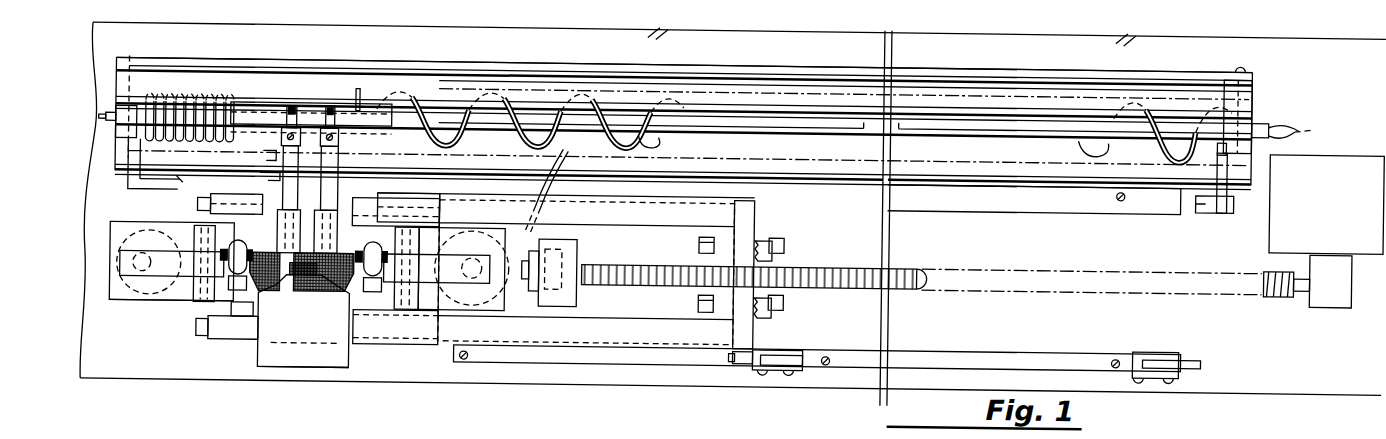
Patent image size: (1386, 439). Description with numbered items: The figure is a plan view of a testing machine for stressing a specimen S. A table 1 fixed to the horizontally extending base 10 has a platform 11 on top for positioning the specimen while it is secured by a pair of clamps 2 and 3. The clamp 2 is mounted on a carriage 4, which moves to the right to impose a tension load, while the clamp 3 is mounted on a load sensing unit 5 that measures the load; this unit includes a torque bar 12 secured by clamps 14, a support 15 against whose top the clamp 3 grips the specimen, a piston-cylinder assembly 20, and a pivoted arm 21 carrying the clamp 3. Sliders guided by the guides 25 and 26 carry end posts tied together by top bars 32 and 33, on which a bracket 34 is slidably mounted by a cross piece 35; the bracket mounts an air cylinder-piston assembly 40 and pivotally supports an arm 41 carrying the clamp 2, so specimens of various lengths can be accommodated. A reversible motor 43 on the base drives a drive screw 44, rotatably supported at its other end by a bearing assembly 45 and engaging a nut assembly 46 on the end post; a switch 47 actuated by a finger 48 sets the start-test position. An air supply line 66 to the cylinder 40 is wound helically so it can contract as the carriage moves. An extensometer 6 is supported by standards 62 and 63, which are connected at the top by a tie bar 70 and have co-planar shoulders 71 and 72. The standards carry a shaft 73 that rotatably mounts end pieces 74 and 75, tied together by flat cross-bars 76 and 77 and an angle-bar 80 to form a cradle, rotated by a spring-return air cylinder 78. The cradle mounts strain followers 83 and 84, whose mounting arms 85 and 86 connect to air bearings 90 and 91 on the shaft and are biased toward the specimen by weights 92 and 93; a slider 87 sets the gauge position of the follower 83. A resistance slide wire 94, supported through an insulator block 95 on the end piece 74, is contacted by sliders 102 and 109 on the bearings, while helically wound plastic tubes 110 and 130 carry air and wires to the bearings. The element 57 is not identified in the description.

The table 1 is at (292, 372).
The clamp 2 is at (388, 228).
The clamp 3 is at (220, 234).
The carriage 4 is at (768, 208).
The load sensing unit 5 is at (178, 297).
The extensometer 6 is at (548, 59).
The base 10 is at (1275, 380).
The platform 11 is at (334, 355).
The torque bar 12 is at (246, 306).
The clamps 14 is at (215, 201).
The support 15 is at (228, 293).
The piston-cylinder assembly 20 is at (118, 252).
The arm 21 is at (171, 270).
The guide 25 is at (1067, 197).
The guide 26 is at (604, 350).
The top bar 32 is at (652, 214).
The top bar 33 is at (657, 288).
The bracket 34 is at (458, 223).
The cross piece 35 is at (384, 311).
The air cylinder-piston assembly 40 is at (511, 273).
The arm 41 is at (423, 279).
The motor 43 is at (1325, 196).
The drive screw 44 is at (908, 247).
The bearing assembly 45 is at (587, 289).
The nut assembly 46 is at (750, 303).
The switch 47 is at (788, 358).
The finger 48 is at (749, 358).
The roller slide 57 is at (1167, 352).
The standard 62 is at (141, 172).
The standard 63 is at (1222, 135).
The air supply line 66 is at (554, 159).
The tie bar 70 is at (185, 178).
The shoulder 71 is at (131, 170).
The shoulder 72 is at (1233, 198).
The shaft 73 is at (752, 127).
The end piece 74 is at (126, 148).
The end piece 75 is at (1252, 72).
The flat cross-bar 76 is at (498, 57).
The flat cross-bar 77 is at (1020, 173).
The air cylinder 78 is at (1267, 110).
The angle-bar 80 is at (458, 83).
The strain follower 83 is at (293, 267).
The strain follower 84 is at (328, 267).
The mounting arm 85 is at (292, 189).
The mounting arm 86 is at (332, 185).
The slider 87 is at (272, 154).
The air bearing 90 is at (264, 101).
The air bearing 91 is at (374, 101).
The weight 92 is at (267, 206).
The weight 93 is at (340, 215).
The slide wire 94 is at (1004, 118).
The insulator block 95 is at (123, 118).
The slider 102 is at (331, 98).
The slider 109 is at (292, 98).
The plastic tube 110 is at (637, 136).
The tube 130 is at (200, 125).